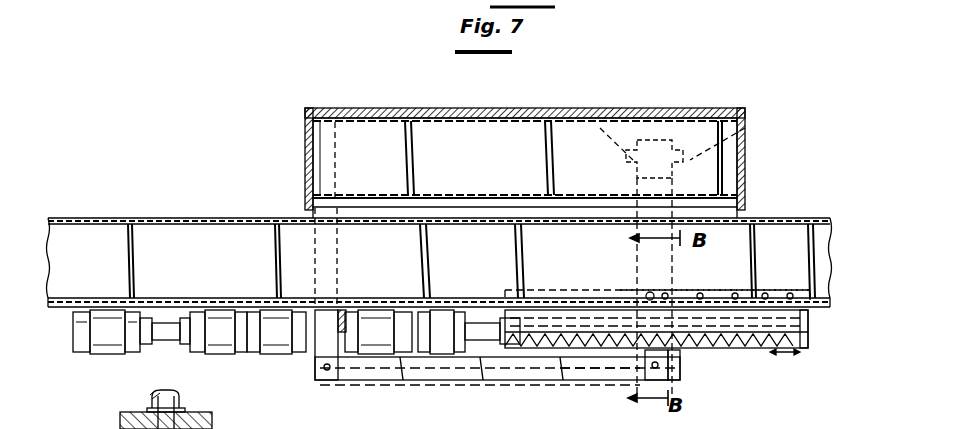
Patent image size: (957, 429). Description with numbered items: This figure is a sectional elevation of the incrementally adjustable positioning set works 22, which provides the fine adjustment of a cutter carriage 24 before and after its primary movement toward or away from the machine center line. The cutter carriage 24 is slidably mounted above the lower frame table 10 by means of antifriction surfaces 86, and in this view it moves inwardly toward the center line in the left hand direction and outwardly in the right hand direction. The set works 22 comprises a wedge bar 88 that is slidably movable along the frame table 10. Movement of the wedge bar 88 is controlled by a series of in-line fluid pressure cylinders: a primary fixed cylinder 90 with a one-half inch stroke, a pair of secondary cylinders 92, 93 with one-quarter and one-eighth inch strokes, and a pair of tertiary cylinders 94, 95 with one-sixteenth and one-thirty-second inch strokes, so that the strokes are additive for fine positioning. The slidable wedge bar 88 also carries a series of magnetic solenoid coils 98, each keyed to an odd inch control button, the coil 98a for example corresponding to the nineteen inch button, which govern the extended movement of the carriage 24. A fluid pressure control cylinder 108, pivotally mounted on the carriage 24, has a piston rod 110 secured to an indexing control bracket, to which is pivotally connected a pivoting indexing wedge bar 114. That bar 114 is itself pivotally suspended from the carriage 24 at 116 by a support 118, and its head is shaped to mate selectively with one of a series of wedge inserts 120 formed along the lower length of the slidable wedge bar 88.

The lower frame table 10 is at (210, 272).
The cutter carriage 24 is at (480, 167).
The antifriction surfaces 86 is at (378, 210).
The fluid pressure control cylinder 108 is at (637, 178).
The support 118 is at (334, 276).
The primary fixed cylinder 90 is at (111, 354).
The piston rod 110 is at (162, 396).
The secondary cylinder 92 is at (229, 354).
The secondary cylinder 93 is at (285, 354).
The pivot 116 is at (324, 384).
The tertiary cylinder 94 is at (376, 308).
The tertiary cylinder 95 is at (452, 308).
The magnetic solenoid coils 98 is at (598, 298).
The magnetic solenoid coil 98a is at (722, 294).
The wedge bar 88 is at (815, 320).
The wedge inserts 120 is at (765, 348).
The positioning set works assembly 22 is at (425, 389).
The pivoting indexing wedge bar 114 is at (558, 370).